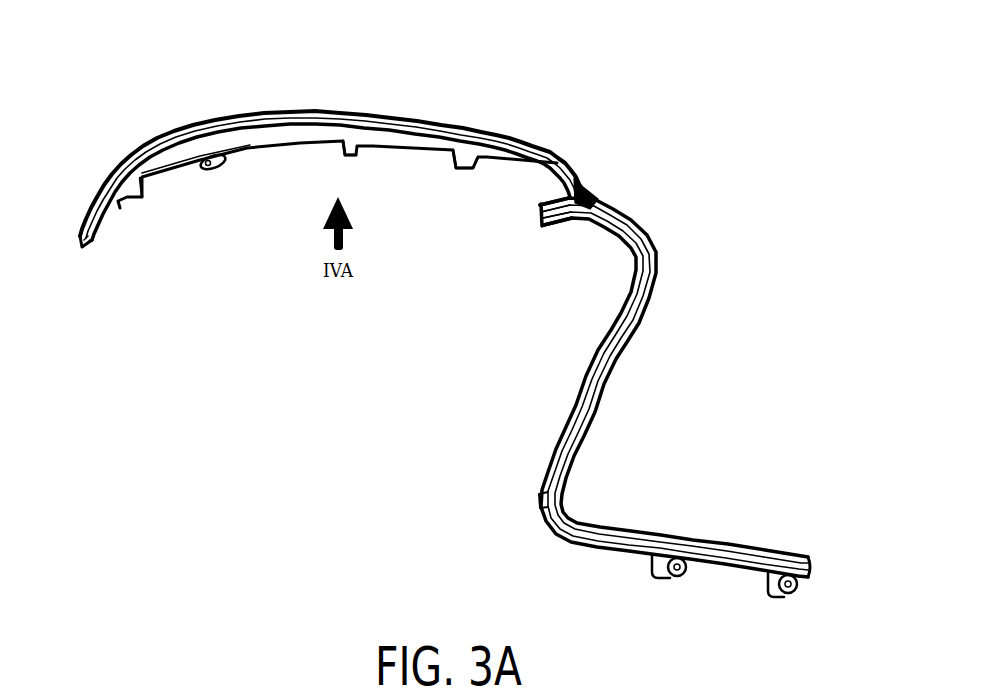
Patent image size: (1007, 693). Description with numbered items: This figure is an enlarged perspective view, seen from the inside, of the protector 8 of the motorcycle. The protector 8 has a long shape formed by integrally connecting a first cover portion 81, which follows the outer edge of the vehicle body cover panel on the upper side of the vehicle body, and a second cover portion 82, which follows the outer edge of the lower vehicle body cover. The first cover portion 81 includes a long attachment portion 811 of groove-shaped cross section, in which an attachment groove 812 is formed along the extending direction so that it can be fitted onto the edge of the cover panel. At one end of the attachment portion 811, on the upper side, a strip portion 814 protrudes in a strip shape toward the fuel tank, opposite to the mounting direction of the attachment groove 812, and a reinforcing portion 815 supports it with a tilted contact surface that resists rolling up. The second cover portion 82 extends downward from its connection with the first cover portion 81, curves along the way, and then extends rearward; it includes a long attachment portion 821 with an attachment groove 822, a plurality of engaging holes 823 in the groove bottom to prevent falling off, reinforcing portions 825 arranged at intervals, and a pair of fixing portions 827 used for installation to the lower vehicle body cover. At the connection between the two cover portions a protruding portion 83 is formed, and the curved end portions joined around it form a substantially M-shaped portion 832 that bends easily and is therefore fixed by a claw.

The protector 8 is at (630, 110).
The first cover portion 81 is at (377, 103).
The attachment portion 811 is at (270, 115).
The attachment groove 812 is at (103, 183).
The strip portion 814 is at (287, 148).
The reinforcing portion 815 is at (210, 170).
The protruding portion 83 is at (551, 201).
The M-shaped portion 832 is at (624, 188).
The second cover portion 82 is at (592, 493).
The attachment portion 821 is at (617, 363).
The attachment groove 822 is at (607, 380).
The engaging holes 823 is at (627, 287).
The reinforcing portions 825 is at (540, 502).
The fixing portions 827 is at (763, 584).